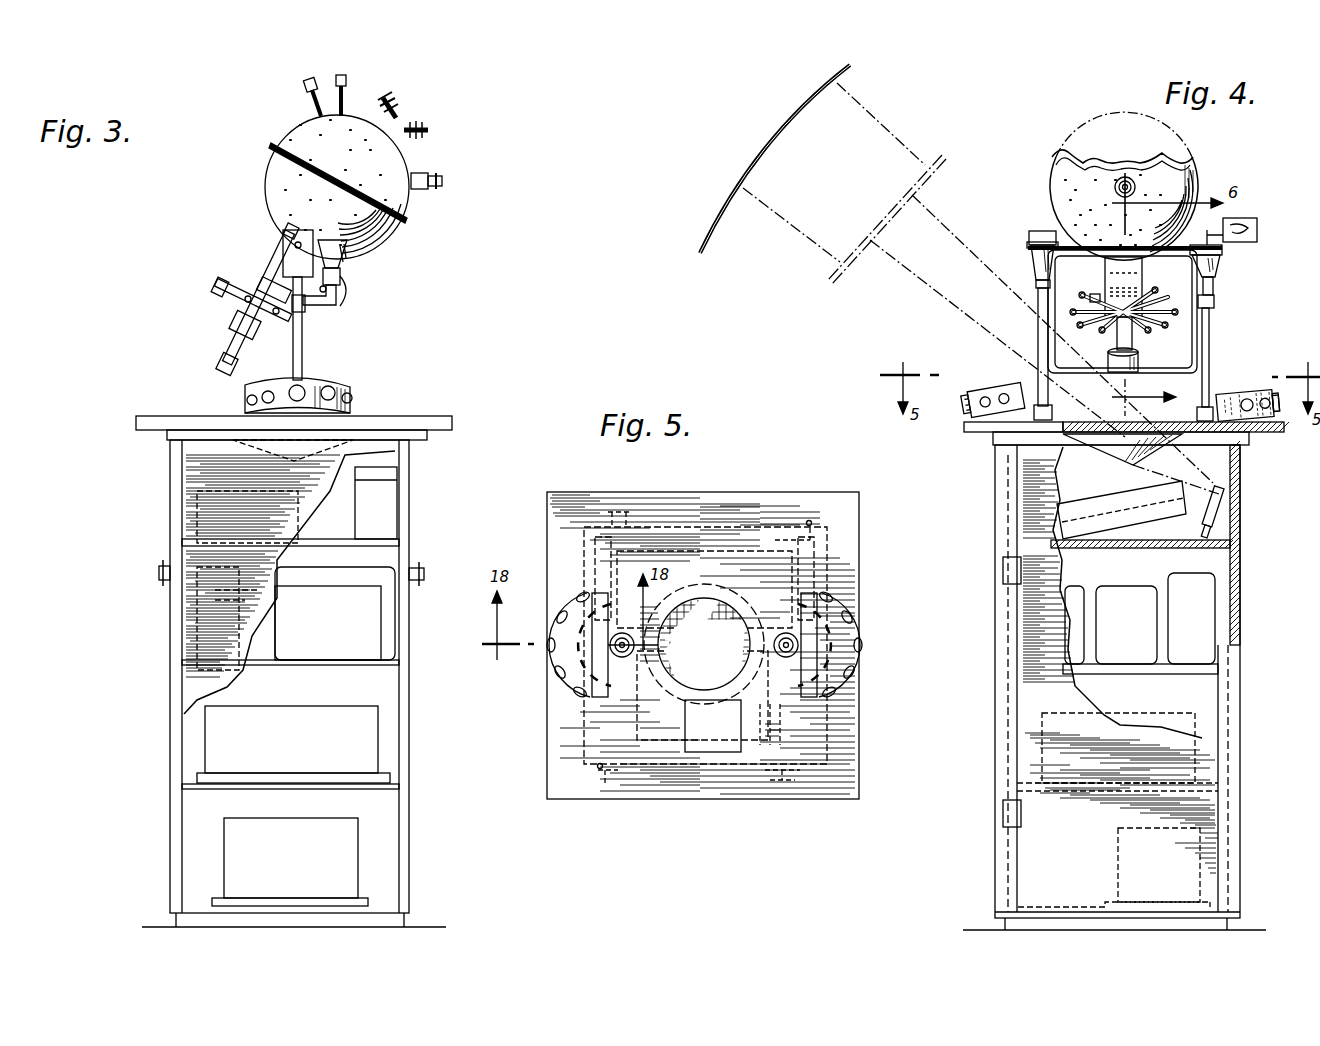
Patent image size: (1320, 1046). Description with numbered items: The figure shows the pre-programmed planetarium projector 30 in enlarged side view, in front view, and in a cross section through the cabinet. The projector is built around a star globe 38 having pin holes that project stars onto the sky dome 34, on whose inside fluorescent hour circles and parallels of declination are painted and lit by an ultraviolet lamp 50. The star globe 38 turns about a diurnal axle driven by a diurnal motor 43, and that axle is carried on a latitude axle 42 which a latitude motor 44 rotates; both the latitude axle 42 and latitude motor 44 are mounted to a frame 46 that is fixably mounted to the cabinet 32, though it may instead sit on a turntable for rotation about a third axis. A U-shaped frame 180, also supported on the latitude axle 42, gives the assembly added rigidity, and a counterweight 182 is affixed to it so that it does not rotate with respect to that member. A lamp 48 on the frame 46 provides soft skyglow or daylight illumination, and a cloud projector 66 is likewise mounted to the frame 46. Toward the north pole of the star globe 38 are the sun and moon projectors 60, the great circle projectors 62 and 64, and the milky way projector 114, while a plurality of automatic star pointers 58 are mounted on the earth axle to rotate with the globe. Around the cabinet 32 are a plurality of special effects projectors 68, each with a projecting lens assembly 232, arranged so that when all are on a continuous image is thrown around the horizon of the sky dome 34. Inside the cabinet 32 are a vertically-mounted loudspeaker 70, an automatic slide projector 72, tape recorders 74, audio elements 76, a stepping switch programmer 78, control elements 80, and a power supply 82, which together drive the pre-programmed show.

In FIG. 3, the planetarium projector 30 is at (258, 215).
In FIG. 4, the planetarium projector 30 is at (1043, 202).
In FIG. 3, the cabinet 32 is at (180, 641).
In FIG. 4, the cabinet 32 is at (1240, 702).
In FIG. 5, the cabinet 32 is at (625, 800).
In FIG. 4, the sky dome 34 is at (763, 152).
In FIG. 3, the star globe 38 is at (306, 126).
In FIG. 4, the star globe 38 is at (1112, 116).
In FIG. 3, the latitude axle 42 is at (297, 242).
In FIG. 4, the latitude axle 42 is at (1214, 298).
In FIG. 3, the diurnal motor 43 is at (336, 305).
In FIG. 4, the diurnal motor 43 is at (1105, 266).
In FIG. 3, the latitude motor 44 is at (292, 262).
In FIG. 4, the latitude motor 44 is at (1034, 264).
In FIG. 3, the frame 46 is at (302, 356).
In FIG. 4, the frame 46 is at (1038, 334).
In FIG. 5, the frame 46 is at (628, 658).
In FIG. 4, the lamp 48 is at (1222, 264).
In FIG. 3, the ultraviolet lamp 50 is at (342, 262).
In FIG. 4, the ultraviolet lamp 50 is at (1040, 240).
In FIG. 3, the star pointers 58 is at (212, 299).
In FIG. 4, the star pointers 58 is at (1182, 322).
In FIG. 3, the sun and moon projectors 60 is at (336, 78).
In FIG. 3, the great circle projector 62 is at (392, 96).
In FIG. 3, the great circle projector 64 is at (428, 128).
In FIG. 4, the cloud projector 66 is at (1250, 218).
In FIG. 3, the projectors 68 is at (352, 384).
In FIG. 4, the projectors 68 is at (990, 425).
In FIG. 5, the projectors 68 is at (563, 689).
In FIG. 3, the loudspeaker 70 is at (282, 462).
In FIG. 4, the loudspeaker 70 is at (1137, 465).
In FIG. 5, the loudspeaker 70 is at (715, 600).
In FIG. 3, the automatic slide projector 72 is at (385, 488).
In FIG. 4, the automatic slide projector 72 is at (1075, 520).
In FIG. 5, the automatic slide projector 72 is at (736, 752).
In FIG. 3, the tape recorders 74 is at (364, 571).
In FIG. 4, the tape recorders 74 is at (1198, 598).
In FIG. 4, the audio elements 76 is at (1128, 593).
In FIG. 3, the stepping switch programmer 78 is at (370, 632).
In FIG. 4, the stepping switch programmer 78 is at (1076, 592).
In FIG. 3, the control elements 80 is at (350, 730).
In FIG. 4, the control elements 80 is at (1180, 724).
In FIG. 3, the power supply 82 is at (325, 848).
In FIG. 4, the power supply 82 is at (1175, 840).
In FIG. 3, the milky way projector 114 is at (442, 181).
In FIG. 4, the milky way projector 114 is at (1130, 182).
In FIG. 3, the U-shaped frame 180 is at (240, 335).
In FIG. 4, the U-shaped frame 180 is at (1140, 366).
In FIG. 4, the counterweight 182 is at (1117, 350).
In FIG. 3, the projecting lens assembly 232 is at (246, 412).
In FIG. 4, the projecting lens assembly 232 is at (1283, 410).